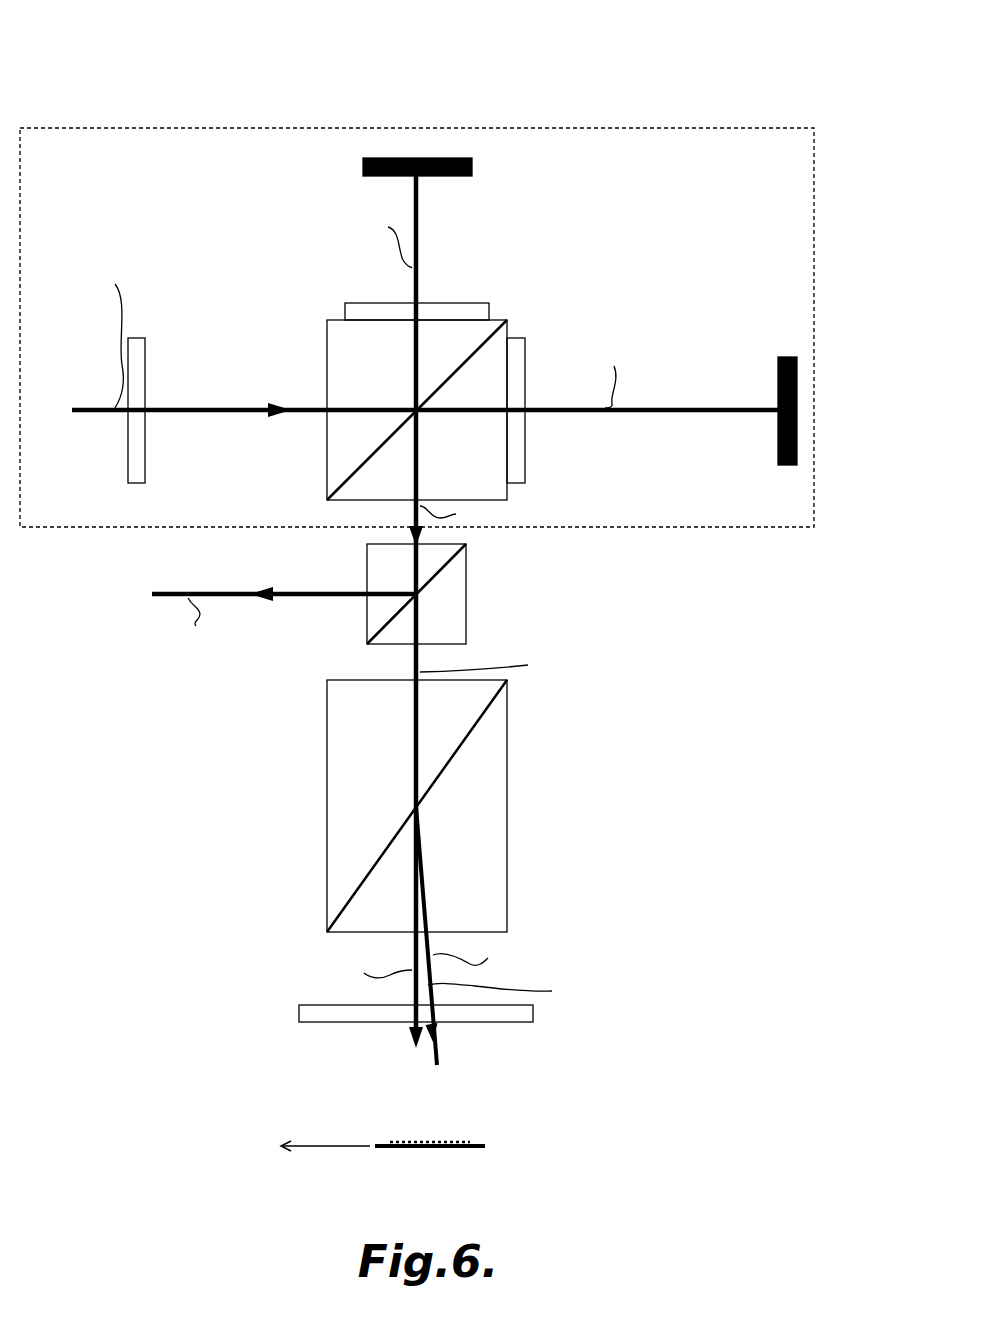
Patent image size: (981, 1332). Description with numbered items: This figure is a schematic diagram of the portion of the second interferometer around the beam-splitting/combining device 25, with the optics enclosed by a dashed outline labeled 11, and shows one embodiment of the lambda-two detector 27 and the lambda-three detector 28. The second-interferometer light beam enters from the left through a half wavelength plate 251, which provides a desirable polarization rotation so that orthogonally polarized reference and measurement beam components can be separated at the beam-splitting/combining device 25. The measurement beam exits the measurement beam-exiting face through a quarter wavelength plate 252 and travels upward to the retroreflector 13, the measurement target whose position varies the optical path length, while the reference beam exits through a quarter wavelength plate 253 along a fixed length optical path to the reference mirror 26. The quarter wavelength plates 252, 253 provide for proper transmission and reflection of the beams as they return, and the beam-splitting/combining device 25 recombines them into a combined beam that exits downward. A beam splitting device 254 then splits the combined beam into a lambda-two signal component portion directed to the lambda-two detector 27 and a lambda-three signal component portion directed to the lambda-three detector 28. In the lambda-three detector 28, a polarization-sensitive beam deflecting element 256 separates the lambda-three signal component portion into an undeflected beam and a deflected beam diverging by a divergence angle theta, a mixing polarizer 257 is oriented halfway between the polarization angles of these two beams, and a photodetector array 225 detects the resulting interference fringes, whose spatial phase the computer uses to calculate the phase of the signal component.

The second interferometer 11 is at (106, 108).
The retroreflector 13 is at (472, 172).
The half wavelength plate 251 is at (145, 364).
The quarter wavelength plate 252 is at (489, 315).
The beam-splitting/combining device 25 is at (507, 322).
The quarter wavelength plate 253 is at (525, 478).
The reference mirror 26 is at (778, 446).
The beam splitting device 254 is at (466, 577).
The λ2 detector 27 is at (217, 642).
The λ3 detector 28 is at (700, 664).
The polarization-sensitive beam deflecting element 256 is at (327, 757).
The mixing polarizer 257 is at (306, 1023).
The photodetector array 225 is at (485, 1145).